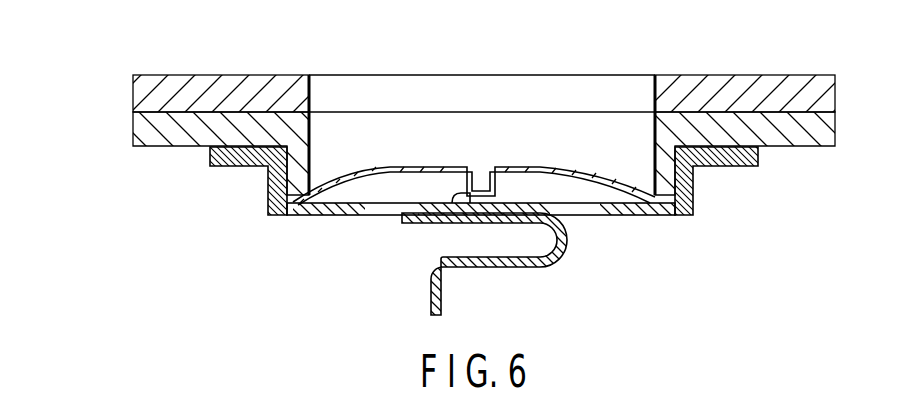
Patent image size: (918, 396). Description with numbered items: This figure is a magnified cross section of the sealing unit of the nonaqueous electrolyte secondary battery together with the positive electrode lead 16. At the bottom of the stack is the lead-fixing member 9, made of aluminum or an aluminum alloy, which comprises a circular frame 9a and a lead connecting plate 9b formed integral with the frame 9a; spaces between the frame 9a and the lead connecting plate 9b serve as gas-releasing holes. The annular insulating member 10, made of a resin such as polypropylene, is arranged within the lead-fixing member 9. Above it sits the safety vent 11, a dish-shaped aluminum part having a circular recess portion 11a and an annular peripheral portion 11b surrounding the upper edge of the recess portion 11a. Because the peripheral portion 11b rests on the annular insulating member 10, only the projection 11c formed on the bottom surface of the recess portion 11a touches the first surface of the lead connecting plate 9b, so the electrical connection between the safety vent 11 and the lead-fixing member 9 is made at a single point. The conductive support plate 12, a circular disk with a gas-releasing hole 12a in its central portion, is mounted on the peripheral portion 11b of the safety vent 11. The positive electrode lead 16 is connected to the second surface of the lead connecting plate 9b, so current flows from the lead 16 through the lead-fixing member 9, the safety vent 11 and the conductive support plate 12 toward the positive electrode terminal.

The lead-fixing member 9 is at (482, 249).
The circular frame 9a is at (672, 216).
The lead connecting plate 9b is at (474, 228).
The annular insulating member 10 is at (746, 168).
The safety vent 11 is at (110, 135).
The circular recess portion 11a is at (297, 216).
The annular peripheral portion 11b is at (187, 148).
The projection 11c is at (457, 203).
The conductive support plate 12 is at (274, 84).
The gas-releasing hole 12a is at (437, 86).
The positive electrode lead 16 is at (500, 268).